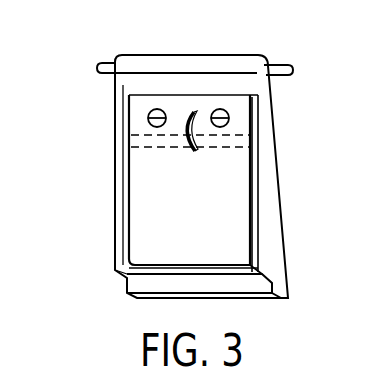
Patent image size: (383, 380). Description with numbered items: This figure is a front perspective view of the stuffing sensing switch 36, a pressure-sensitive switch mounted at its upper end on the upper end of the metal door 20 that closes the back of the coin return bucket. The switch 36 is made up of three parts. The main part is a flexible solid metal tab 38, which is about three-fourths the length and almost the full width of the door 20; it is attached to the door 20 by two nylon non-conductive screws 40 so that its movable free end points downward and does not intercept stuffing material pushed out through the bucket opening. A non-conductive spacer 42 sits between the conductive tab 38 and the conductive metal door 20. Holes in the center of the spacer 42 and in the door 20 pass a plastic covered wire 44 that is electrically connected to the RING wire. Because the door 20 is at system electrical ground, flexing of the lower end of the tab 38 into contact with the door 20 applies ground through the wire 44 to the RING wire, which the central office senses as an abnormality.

The metal door 20 is at (280, 258).
The stuffing sensing switch 36 is at (255, 158).
The flexible solid metal tab 38 is at (192, 234).
The nylon non-conductive screws 40 is at (160, 108).
The non-conductive spacer 42 is at (128, 118).
The plastic covered wire 44 is at (196, 153).